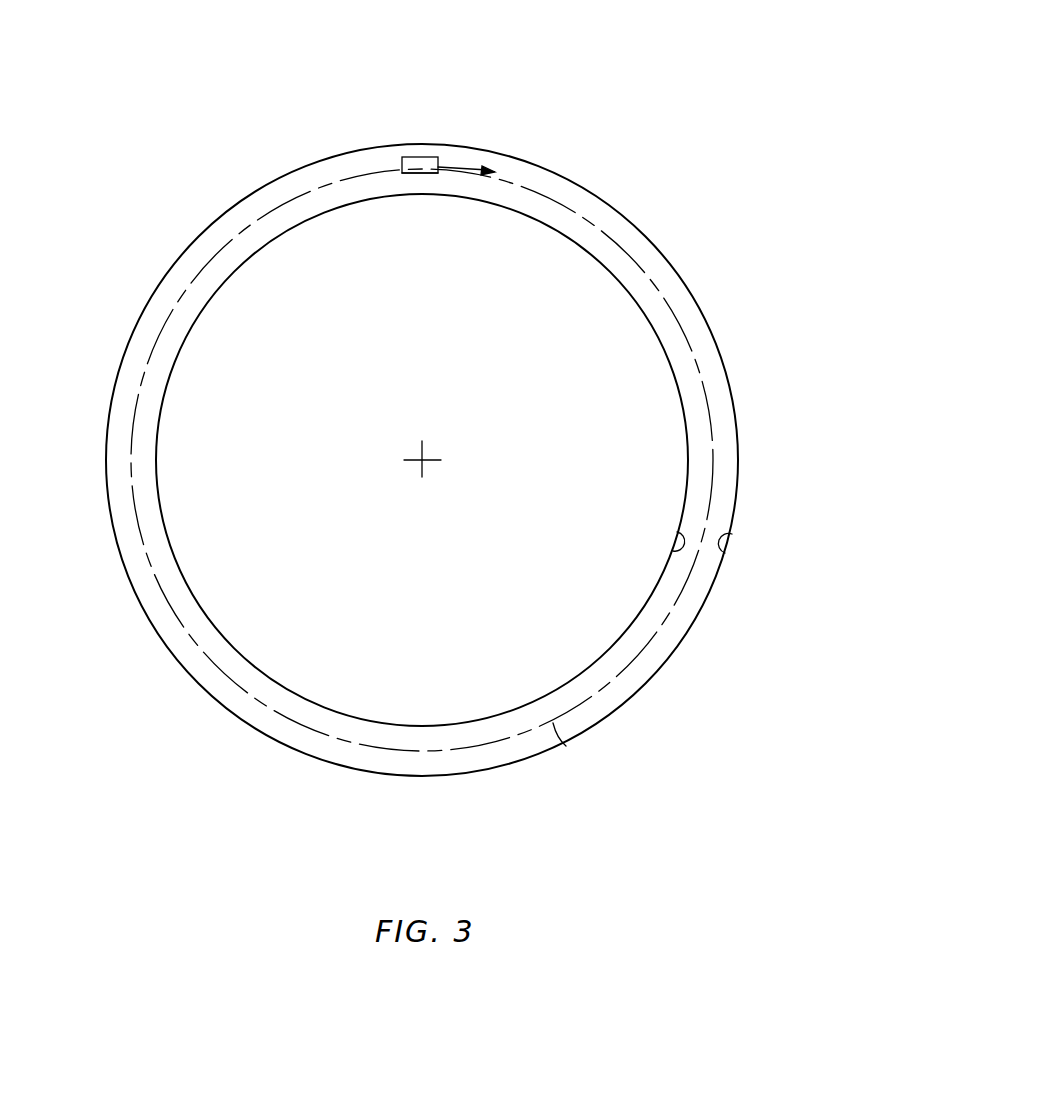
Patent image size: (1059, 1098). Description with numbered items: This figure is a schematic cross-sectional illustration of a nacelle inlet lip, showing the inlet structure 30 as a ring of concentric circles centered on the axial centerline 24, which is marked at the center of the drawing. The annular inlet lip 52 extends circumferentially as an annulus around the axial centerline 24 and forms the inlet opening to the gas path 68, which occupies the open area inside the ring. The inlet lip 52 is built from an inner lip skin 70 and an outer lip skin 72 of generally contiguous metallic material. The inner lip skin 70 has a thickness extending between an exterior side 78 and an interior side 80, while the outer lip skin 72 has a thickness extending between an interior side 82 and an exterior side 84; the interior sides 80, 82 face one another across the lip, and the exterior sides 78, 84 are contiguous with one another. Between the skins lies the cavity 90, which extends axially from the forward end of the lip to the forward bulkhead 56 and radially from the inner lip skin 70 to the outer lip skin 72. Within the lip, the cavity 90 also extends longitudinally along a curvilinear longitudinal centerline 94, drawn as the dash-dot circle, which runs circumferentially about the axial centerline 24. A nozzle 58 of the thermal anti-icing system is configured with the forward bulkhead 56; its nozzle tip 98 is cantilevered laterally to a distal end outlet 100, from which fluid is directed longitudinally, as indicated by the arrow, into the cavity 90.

The inlet structure 30 is at (612, 90).
The inlet lip 52 is at (738, 457).
The forward bulkhead 56 is at (677, 288).
The outer lip skin 72 is at (723, 357).
The inner lip skin 70 is at (677, 378).
The exterior/inner side 78 is at (680, 518).
The interior/outer side 80 is at (678, 550).
The interior/inner side 82 is at (729, 546).
The exterior/outer side 84 is at (735, 520).
The cavity 90 is at (231, 711).
The curvilinear longitudinal centerline 94 is at (566, 746).
The nozzle tip 98 is at (423, 157).
The distal end outlet 100 is at (439, 166).
The nozzle 58 is at (420, 174).
The gas path 68 is at (327, 376).
The axial centerline 24 is at (420, 460).